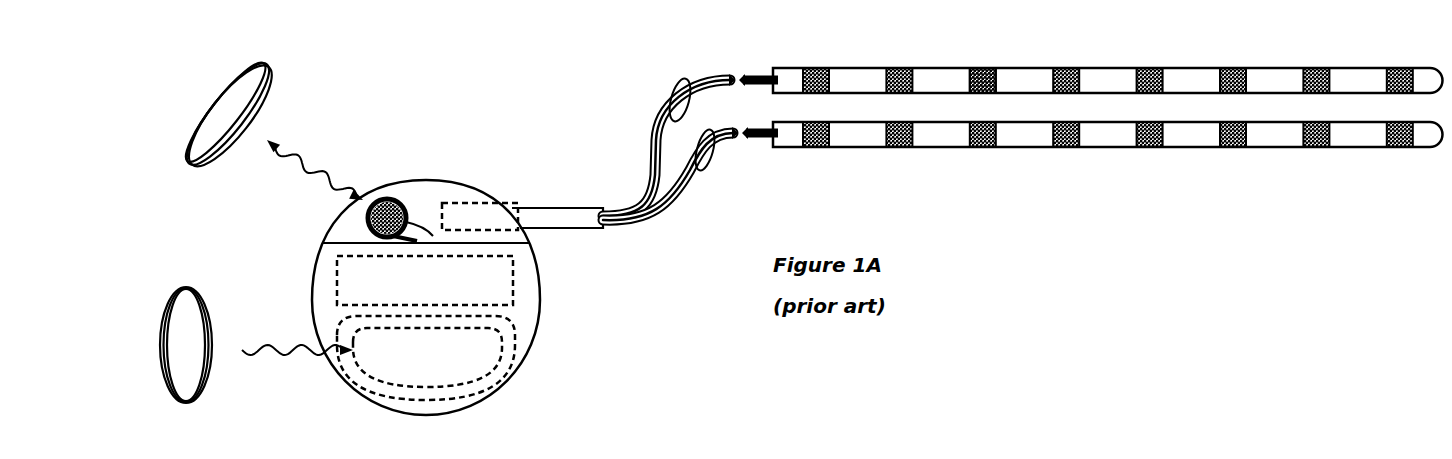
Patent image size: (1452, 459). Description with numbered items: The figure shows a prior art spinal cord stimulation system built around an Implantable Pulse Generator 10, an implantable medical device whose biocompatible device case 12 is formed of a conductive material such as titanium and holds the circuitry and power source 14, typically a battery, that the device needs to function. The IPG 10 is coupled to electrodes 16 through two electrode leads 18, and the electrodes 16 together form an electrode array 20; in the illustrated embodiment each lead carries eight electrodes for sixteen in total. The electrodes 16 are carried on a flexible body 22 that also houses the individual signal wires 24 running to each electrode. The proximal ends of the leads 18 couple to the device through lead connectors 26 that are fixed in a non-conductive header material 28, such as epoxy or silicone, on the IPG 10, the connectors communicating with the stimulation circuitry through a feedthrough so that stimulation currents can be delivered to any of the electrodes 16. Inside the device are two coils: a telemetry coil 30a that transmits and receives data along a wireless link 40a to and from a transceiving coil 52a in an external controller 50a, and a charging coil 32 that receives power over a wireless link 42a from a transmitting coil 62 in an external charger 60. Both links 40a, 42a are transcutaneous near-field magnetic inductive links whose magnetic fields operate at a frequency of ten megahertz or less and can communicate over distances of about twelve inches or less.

The implantable pulse generator 10 is at (440, 269).
The device case 12 is at (538, 318).
The power source 14 is at (505, 278).
The electrodes 16 is at (985, 68).
The electrode leads 18 is at (960, 156).
The electrode array 20 is at (1107, 136).
The flexible body 22 is at (862, 68).
The signal wires 24 is at (670, 90).
The lead connectors 26 is at (470, 203).
The header material 28 is at (334, 217).
The telemetry coil 30a is at (393, 199).
The charging coil 32 is at (400, 321).
The wireless link 40a is at (315, 169).
The wireless link 42a is at (297, 350).
The external controller 50a is at (243, 91).
The transceiving coil 52a is at (218, 86).
The external charger 60 is at (159, 323).
The transmitting coil 62 is at (165, 305).